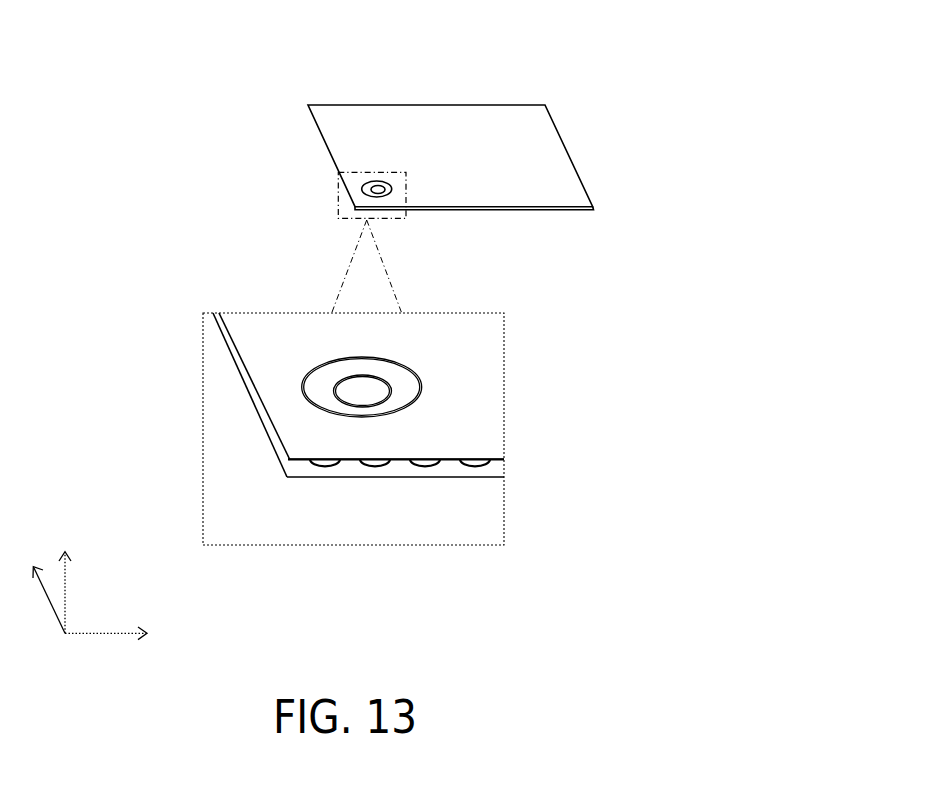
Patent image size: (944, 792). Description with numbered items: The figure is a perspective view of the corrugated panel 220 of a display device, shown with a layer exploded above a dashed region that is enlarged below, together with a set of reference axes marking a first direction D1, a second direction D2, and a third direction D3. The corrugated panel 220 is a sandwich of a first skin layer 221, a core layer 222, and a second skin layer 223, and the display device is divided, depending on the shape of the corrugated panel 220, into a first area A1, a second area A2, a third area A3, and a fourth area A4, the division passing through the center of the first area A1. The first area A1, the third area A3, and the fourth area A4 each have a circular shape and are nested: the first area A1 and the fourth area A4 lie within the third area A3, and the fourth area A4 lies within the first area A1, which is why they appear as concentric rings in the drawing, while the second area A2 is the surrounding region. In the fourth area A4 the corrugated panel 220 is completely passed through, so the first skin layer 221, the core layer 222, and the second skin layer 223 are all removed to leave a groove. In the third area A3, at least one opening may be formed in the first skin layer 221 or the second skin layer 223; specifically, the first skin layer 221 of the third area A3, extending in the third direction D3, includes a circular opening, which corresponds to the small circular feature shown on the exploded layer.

The corrugated panel 220 is at (533, 28).
The first skin layer 221 is at (483, 389).
The core layer 222 is at (488, 463).
The second skin layer 223 is at (488, 470).
The first area A1 is at (328, 363).
The second area A2 is at (285, 408).
The third area A3 is at (395, 373).
The fourth area A4 is at (334, 388).
The first direction D1 is at (125, 636).
The second direction D2 is at (66, 581).
The third direction D3 is at (41, 588).